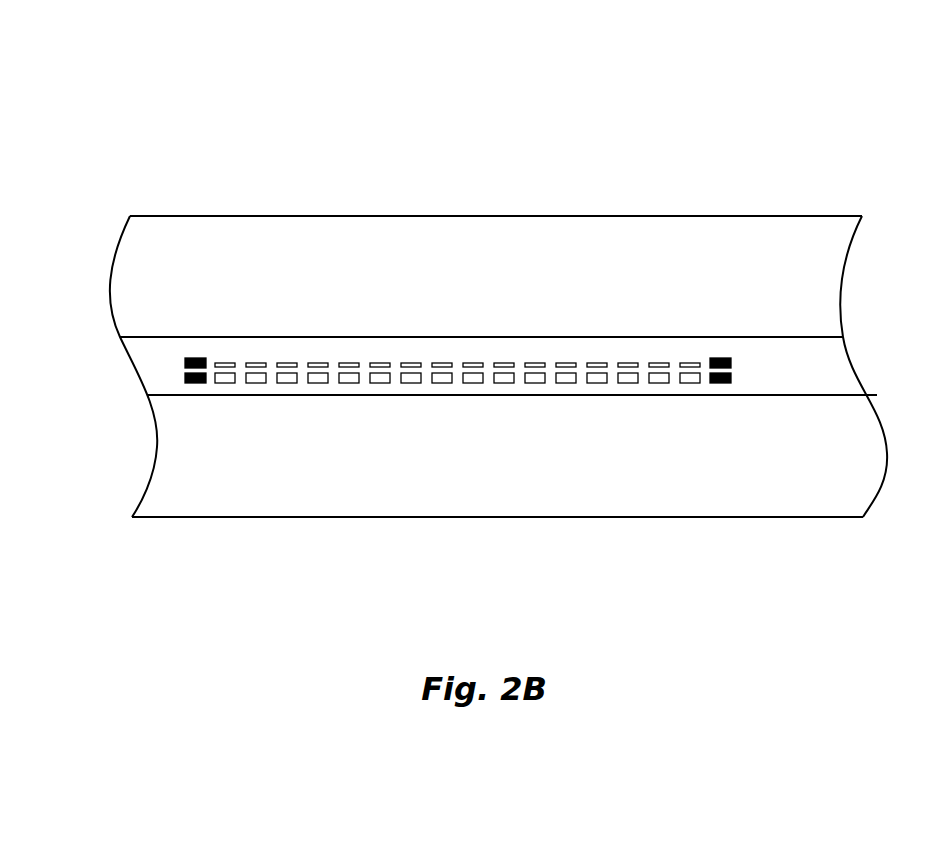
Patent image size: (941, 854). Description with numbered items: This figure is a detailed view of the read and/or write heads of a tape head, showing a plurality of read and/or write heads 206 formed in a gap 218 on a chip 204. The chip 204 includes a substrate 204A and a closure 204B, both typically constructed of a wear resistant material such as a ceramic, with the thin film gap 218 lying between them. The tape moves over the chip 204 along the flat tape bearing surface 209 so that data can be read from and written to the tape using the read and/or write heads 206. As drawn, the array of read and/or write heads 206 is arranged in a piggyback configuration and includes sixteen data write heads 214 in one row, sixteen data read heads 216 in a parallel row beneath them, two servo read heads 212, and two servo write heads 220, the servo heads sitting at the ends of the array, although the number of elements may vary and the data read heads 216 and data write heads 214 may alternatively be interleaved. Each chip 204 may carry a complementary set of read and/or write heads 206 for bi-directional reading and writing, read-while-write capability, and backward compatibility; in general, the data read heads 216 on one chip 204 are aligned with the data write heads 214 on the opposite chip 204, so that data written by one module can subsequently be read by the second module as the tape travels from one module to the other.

The chip 204 is at (147, 188).
The substrate 204A is at (254, 216).
The closure 204B is at (318, 517).
The tape bearing surface 209 is at (409, 296).
The read and/or write heads 206 is at (766, 363).
The servo read heads 212 is at (185, 378).
The data write heads 214 is at (597, 362).
The data read heads 216 is at (596, 383).
The gap 218 is at (862, 364).
The servo write heads 220 is at (185, 362).